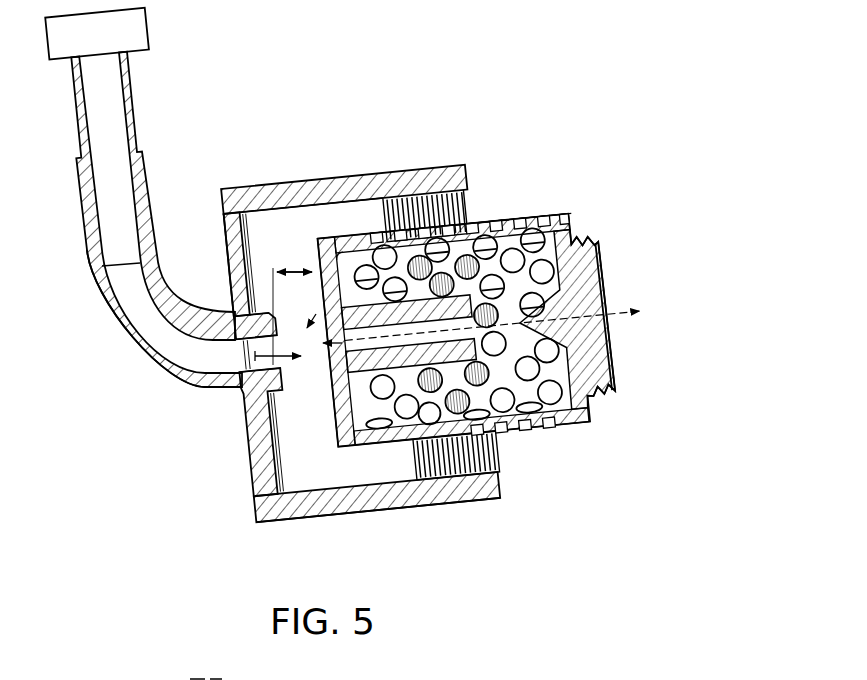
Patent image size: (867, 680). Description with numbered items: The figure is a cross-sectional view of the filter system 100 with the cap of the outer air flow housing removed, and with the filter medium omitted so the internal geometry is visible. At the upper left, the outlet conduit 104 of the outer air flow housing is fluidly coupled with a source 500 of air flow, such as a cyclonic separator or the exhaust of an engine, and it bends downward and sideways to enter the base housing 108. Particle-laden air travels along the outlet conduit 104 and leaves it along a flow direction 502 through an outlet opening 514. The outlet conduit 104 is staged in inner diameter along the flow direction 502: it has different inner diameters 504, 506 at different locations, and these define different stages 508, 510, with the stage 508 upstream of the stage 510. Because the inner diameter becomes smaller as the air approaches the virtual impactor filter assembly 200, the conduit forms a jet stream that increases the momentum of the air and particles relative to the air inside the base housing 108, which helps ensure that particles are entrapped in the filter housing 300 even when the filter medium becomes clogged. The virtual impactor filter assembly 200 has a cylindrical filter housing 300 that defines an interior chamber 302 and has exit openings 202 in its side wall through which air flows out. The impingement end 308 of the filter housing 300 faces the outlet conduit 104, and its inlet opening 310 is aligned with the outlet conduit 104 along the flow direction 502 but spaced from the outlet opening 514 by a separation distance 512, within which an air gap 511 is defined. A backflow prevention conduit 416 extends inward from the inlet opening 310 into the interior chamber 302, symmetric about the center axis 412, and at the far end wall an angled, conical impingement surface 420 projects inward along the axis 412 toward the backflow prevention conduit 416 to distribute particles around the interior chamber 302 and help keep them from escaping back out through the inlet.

The filter system 100 is at (390, 297).
The outlet conduit 104 is at (108, 97).
The base housing 108 is at (252, 193).
The virtual impactor filter assembly 200 is at (516, 307).
The exit openings 202 is at (531, 223).
The filter housing 300 is at (568, 216).
The interior chamber 302 is at (512, 329).
The impingement end 308 is at (340, 462).
The inlet opening 310 is at (325, 346).
The center axis 412 is at (620, 313).
The backflow prevention conduit 416 is at (491, 228).
The impingement surface 420 is at (590, 285).
The source 500 is at (150, 23).
The flow direction 502 is at (287, 365).
The inner diameter 504 is at (265, 337).
The inner diameter 506 is at (227, 270).
The stage 508 is at (197, 393).
The stage 510 is at (272, 374).
The air gap 511 is at (353, 240).
The separation distance 512 is at (297, 268).
The outlet opening 514 is at (314, 314).